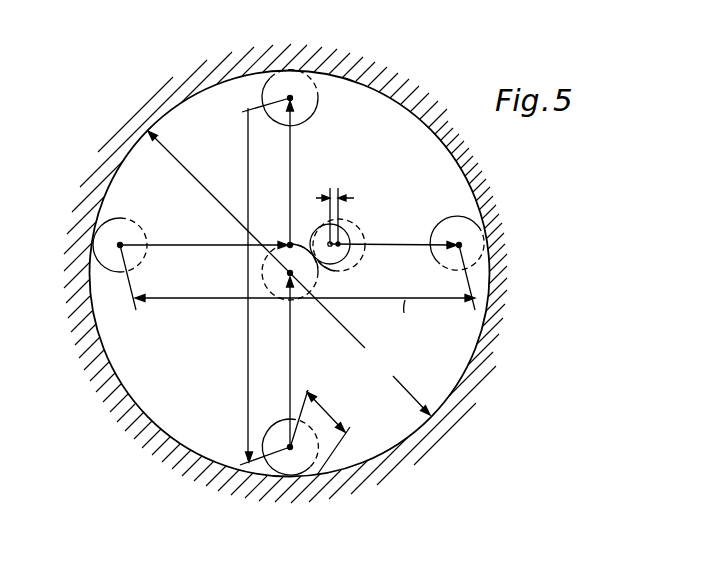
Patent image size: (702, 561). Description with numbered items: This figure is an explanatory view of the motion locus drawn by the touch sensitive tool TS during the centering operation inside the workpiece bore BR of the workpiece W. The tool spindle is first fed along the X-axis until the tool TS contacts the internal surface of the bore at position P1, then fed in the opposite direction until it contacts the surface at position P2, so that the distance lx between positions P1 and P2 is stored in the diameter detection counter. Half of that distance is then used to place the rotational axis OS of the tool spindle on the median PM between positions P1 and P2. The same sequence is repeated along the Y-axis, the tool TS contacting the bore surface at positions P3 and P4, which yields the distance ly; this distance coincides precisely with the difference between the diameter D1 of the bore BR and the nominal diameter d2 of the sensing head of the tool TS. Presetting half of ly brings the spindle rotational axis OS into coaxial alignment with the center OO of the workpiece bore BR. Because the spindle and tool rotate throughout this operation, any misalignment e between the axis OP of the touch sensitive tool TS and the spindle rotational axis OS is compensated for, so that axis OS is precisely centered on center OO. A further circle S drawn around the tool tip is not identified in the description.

The workpiece bore BR is at (151, 426).
The workpiece W is at (490, 362).
The position P1 is at (462, 244).
The position P2 is at (112, 244).
The position P3 is at (290, 97).
The position P4 is at (290, 450).
The median between positions P1 and P2 PM is at (288, 244).
The center of the workpiece bore OO is at (292, 285).
The axis of the touch sensitive tool OP is at (332, 272).
The touch sensitive tool TS is at (355, 262).
The rotational axis of the tool spindle OS is at (348, 240).
The stylus circle S is at (362, 210).
The misalignment e is at (335, 209).
The distance between positions P1 and P2 lx is at (297, 294).
The distance between positions P3 and P4 ly is at (248, 338).
The diameter of the workpiece bore D1 is at (289, 273).
The nominal diameter of the sensing head d2 is at (320, 432).